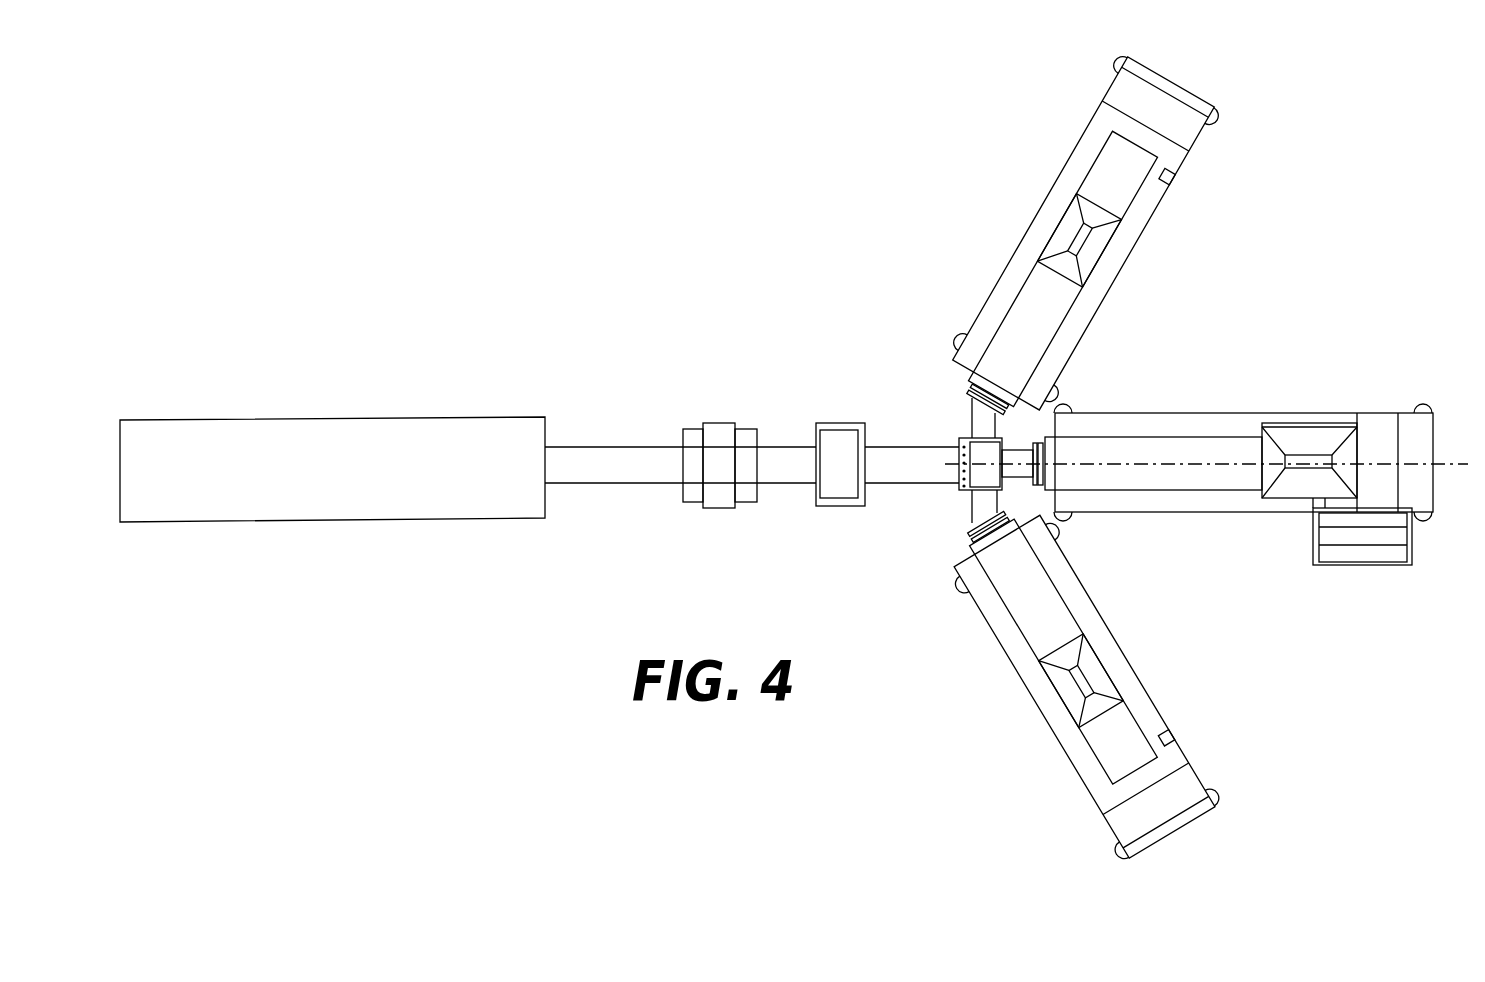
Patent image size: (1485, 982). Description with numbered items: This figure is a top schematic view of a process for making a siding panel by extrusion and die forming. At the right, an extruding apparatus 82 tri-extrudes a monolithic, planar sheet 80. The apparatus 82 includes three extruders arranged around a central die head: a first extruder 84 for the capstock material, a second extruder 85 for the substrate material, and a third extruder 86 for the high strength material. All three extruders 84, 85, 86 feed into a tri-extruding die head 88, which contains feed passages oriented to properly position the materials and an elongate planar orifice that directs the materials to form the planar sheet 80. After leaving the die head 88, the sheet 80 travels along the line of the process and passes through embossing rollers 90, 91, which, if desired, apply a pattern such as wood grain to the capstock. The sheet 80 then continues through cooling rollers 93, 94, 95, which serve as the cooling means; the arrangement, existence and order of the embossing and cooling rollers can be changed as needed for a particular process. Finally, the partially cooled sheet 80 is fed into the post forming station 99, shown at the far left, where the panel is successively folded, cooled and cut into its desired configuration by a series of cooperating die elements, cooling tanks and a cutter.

The planar sheet 80 is at (912, 453).
The extruding apparatus 82 is at (1190, 457).
The first extruder 84 is at (1142, 213).
The second extruder 85 is at (1232, 415).
The third extruder 86 is at (1115, 670).
The tri-extruding die head 88 is at (985, 447).
The embossing roller 90 is at (847, 437).
The embossing roller 91 is at (852, 502).
The cooling roller 93 is at (748, 433).
The cooling roller 94 is at (692, 435).
The cooling roller 95 is at (720, 427).
The post forming station 99 is at (482, 427).